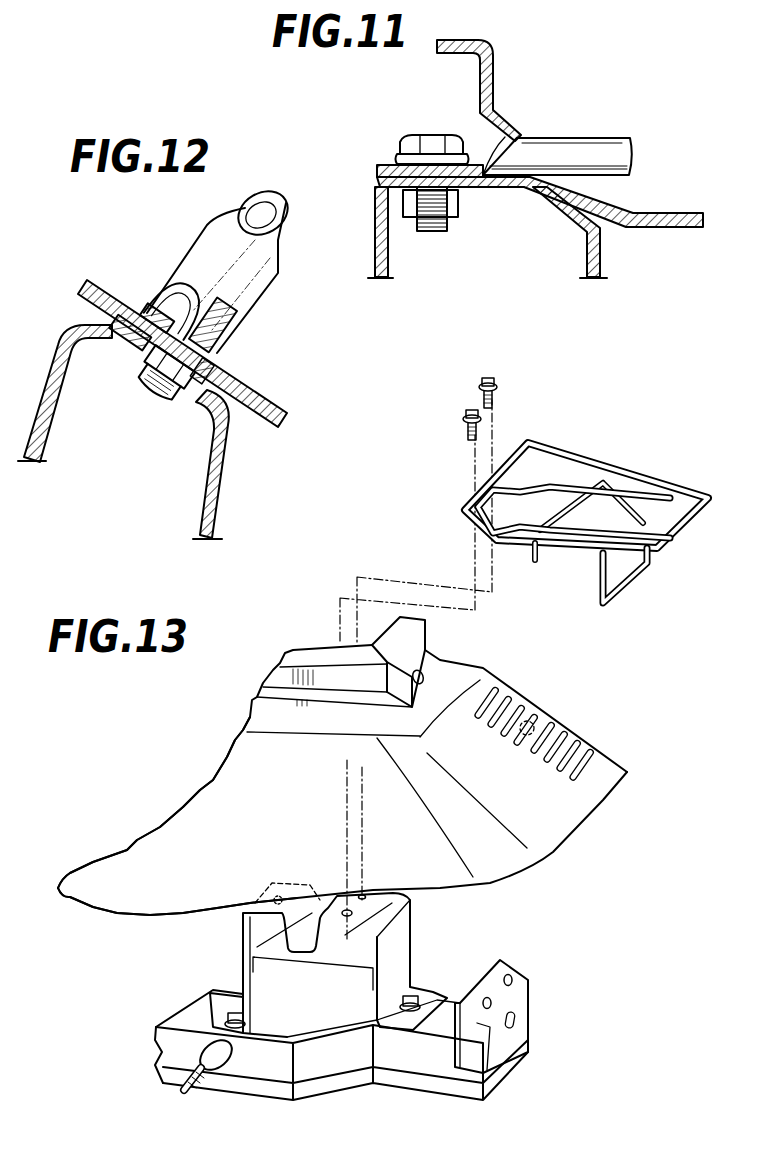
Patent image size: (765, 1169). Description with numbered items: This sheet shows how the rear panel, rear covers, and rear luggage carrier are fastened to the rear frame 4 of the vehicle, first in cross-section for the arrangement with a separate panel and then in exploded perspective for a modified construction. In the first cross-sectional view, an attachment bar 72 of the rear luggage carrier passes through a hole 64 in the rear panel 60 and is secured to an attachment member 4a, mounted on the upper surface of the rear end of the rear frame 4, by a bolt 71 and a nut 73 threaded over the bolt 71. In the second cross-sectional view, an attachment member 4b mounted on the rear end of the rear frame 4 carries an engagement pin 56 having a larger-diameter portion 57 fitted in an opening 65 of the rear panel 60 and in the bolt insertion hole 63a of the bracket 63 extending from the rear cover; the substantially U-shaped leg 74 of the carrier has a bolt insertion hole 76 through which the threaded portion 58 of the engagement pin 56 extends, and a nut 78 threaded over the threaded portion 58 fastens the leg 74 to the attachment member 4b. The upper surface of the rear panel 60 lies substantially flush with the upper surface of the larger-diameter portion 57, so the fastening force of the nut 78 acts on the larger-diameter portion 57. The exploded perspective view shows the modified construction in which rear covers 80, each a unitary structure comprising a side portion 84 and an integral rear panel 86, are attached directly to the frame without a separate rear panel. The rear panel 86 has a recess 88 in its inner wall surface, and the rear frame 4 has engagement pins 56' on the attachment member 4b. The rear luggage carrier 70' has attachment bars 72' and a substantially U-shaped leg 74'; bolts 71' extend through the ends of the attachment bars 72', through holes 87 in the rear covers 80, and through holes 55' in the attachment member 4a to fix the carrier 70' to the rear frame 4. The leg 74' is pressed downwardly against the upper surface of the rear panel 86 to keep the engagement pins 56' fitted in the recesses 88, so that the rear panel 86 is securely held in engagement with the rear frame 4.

In FIG. 13, the rear frame 4 is at (258, 1065).
In FIG. 11, the attachment member 4a is at (374, 230).
In FIG. 13, the attachment member 4a is at (402, 960).
In FIG. 12, the attachment member 4b is at (217, 482).
In FIG. 13, the attachment member 4b is at (530, 1006).
In FIG. 13, the holes 55' is at (407, 907).
In FIG. 12, the engagement pins 56 is at (144, 410).
In FIG. 13, the engagement pins 56' is at (532, 959).
In FIG. 12, the larger-diameter portions 57 is at (157, 363).
In FIG. 12, the threaded portions 58 is at (190, 290).
In FIG. 11, the rear panel 60 is at (671, 211).
In FIG. 12, the rear panel 60 is at (264, 398).
In FIG. 12, the bracket 63 is at (110, 330).
In FIG. 12, the bolt insertion hole 63a is at (130, 367).
In FIG. 11, the holes 64 is at (510, 135).
In FIG. 12, the openings 65 is at (158, 387).
In FIG. 13, the rear luggage carrier 70' is at (586, 478).
In FIG. 11, the bolts 71 is at (432, 152).
In FIG. 13, the bolts 71' is at (455, 384).
In FIG. 11, the attachment bars 72 is at (557, 126).
In FIG. 13, the attachment bars 72' is at (574, 467).
In FIG. 11, the nuts 73 is at (458, 200).
In FIG. 12, the leg 74 is at (220, 268).
In FIG. 13, the leg 74' is at (629, 596).
In FIG. 12, the bolt insertion holes 76 is at (177, 303).
In FIG. 12, the nuts 78 is at (218, 328).
In FIG. 13, the rear covers 80 is at (612, 806).
In FIG. 13, the side portion 84 is at (147, 897).
In FIG. 13, the rear panel 86 is at (600, 772).
In FIG. 13, the holes 87 is at (433, 658).
In FIG. 13, the recess 88 is at (533, 722).